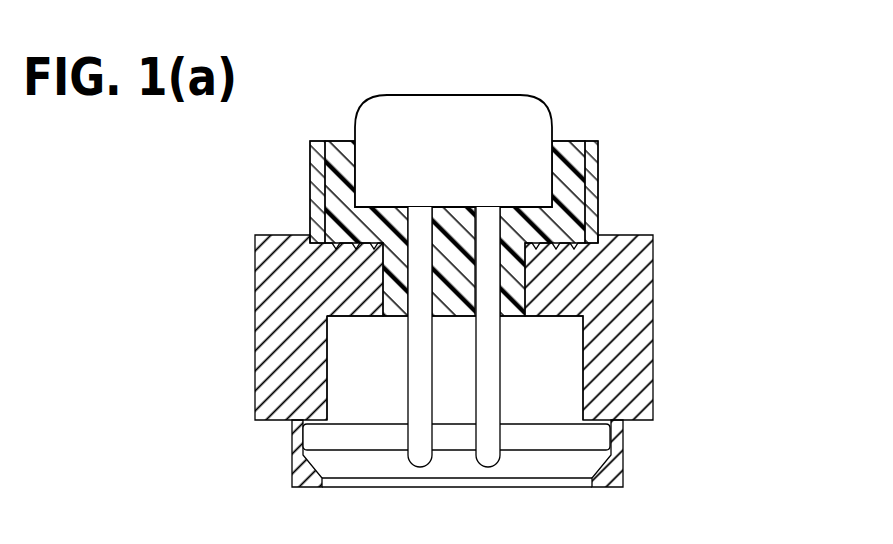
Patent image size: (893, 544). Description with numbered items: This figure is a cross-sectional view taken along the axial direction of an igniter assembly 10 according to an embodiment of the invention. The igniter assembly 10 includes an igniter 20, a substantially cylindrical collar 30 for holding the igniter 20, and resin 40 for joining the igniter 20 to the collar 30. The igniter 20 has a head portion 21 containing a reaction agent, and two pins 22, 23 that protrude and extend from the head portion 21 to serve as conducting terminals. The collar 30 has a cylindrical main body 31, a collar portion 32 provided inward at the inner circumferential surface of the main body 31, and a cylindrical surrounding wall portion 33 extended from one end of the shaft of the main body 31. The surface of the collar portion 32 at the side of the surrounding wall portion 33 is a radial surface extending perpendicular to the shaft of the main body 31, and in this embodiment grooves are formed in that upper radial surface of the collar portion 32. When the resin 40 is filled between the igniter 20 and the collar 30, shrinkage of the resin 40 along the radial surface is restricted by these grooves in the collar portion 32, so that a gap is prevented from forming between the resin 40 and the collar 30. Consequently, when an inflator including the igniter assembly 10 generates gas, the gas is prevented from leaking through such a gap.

The igniter assembly 10 is at (700, 190).
The igniter 20 is at (488, 80).
The head portion 21 is at (425, 114).
The pin 22 is at (420, 478).
The pin 23 is at (488, 478).
The collar 30 is at (665, 278).
The main body 31 is at (656, 340).
The collar portion 32 is at (562, 316).
The surrounding wall portion 33 is at (600, 173).
The resin 40 is at (337, 158).